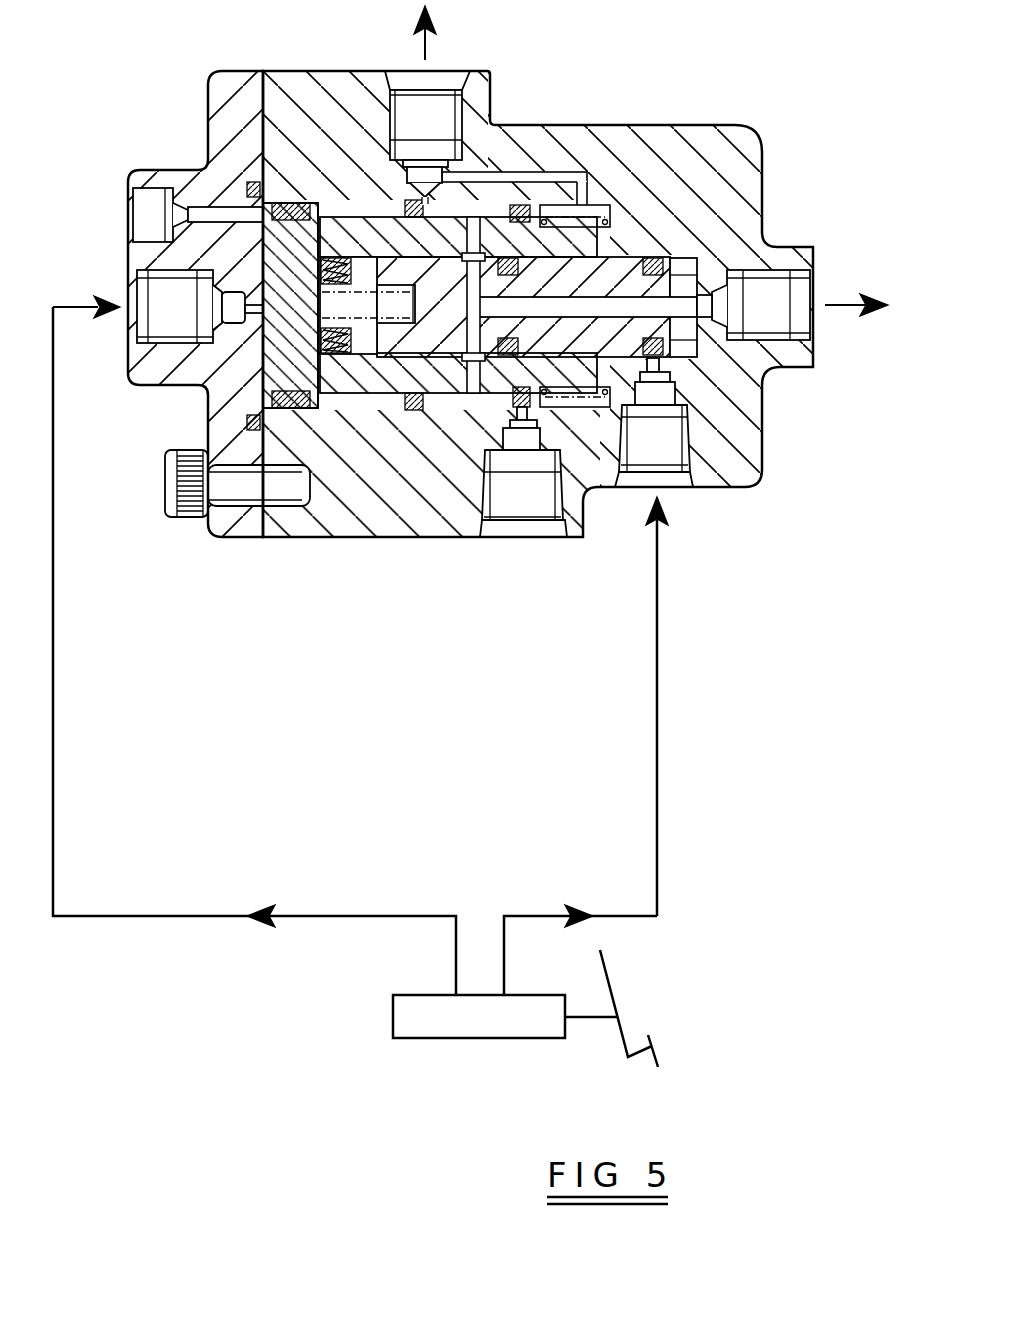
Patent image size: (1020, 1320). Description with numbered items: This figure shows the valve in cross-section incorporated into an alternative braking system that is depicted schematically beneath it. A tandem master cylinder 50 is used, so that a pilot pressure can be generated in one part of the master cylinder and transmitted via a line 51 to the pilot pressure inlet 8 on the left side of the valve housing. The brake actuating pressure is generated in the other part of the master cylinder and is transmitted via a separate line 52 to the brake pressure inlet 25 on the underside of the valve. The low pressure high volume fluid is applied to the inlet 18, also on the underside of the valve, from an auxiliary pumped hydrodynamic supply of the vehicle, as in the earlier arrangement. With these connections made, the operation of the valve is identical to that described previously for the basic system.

The pilot pressure inlet 8 is at (162, 300).
The inlet 18 is at (523, 500).
The brake pressure inlet 25 is at (667, 443).
The tandem master cylinder 50 is at (408, 1012).
The line 51 is at (367, 916).
The line 52 is at (660, 610).